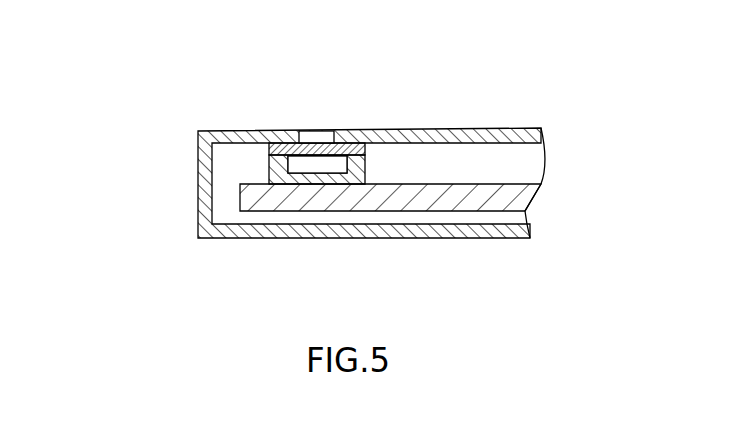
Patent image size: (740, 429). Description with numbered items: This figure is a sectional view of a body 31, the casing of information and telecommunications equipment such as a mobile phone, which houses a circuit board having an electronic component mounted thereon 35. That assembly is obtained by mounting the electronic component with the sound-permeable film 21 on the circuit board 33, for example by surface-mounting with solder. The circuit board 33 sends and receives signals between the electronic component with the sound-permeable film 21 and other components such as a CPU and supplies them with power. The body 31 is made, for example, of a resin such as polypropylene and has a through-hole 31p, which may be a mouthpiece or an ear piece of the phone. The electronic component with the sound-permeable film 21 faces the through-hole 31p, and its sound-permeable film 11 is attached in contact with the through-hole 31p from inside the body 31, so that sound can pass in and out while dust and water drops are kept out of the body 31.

The circuit board having an electronic component mounted thereon 35 is at (140, 107).
The electronic component with the sound-permeable film 21 is at (265, 167).
The circuit board 33 is at (250, 195).
The through-hole 31p is at (321, 129).
The sound-permeable film 11 is at (365, 147).
The body 31 is at (458, 130).